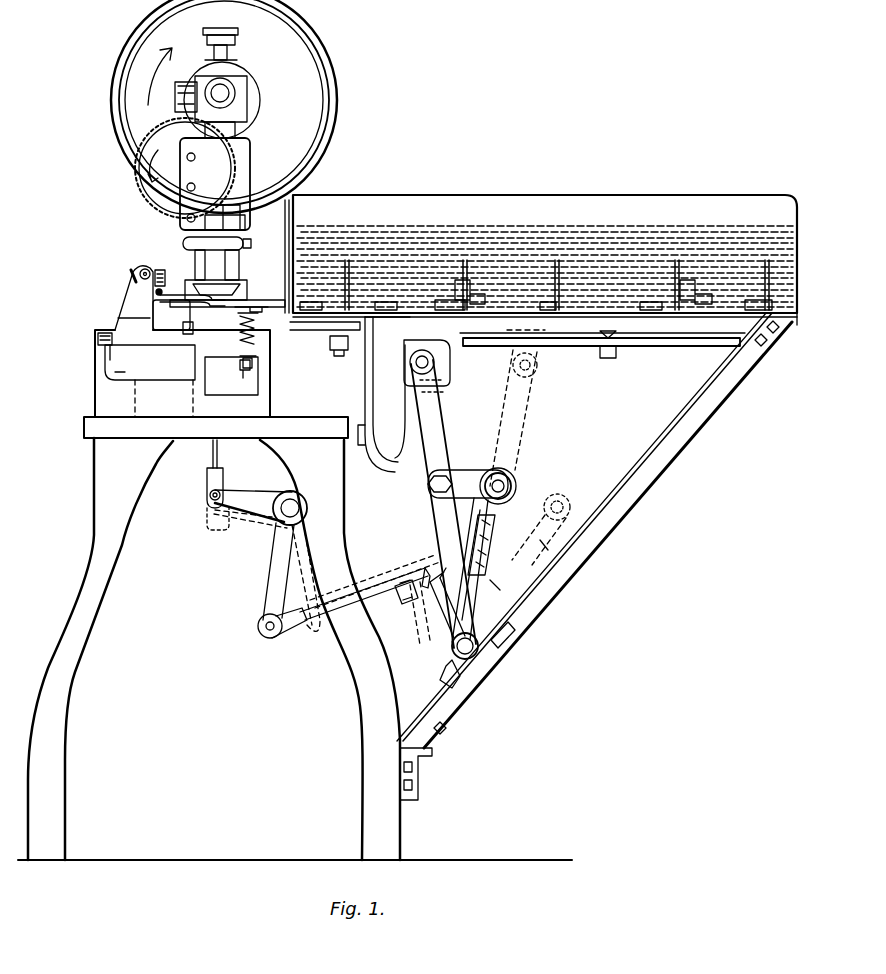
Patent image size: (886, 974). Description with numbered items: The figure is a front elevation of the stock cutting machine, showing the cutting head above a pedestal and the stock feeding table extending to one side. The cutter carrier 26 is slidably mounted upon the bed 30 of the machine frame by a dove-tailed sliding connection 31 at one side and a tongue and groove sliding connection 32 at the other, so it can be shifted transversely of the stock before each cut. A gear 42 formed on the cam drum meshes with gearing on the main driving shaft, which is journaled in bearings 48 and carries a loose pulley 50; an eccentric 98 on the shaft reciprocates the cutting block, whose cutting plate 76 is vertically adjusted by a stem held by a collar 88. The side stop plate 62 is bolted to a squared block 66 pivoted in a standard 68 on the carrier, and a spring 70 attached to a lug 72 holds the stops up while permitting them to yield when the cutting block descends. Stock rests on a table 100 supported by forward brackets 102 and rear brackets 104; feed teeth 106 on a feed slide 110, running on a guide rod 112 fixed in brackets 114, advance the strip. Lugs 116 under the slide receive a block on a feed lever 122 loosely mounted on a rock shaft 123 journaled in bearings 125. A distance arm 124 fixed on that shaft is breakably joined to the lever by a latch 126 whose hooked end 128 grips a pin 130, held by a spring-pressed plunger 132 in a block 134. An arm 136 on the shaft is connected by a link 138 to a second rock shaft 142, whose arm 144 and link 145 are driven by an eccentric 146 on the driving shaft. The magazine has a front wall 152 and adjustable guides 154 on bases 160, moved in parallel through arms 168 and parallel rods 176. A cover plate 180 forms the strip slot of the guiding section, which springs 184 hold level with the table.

The cutter carrier 26 is at (118, 328).
The bed 30 is at (250, 385).
The dove-tailed sliding connection 31 is at (232, 365).
The tongue and groove sliding connection 32 is at (98, 343).
The gear 42 is at (136, 185).
The bearings 48 is at (242, 72).
The loose pulley 50 is at (220, 31).
The side stop plate 62 is at (200, 296).
The squared block 66 is at (148, 268).
The standard 68 is at (155, 293).
The spring 70 is at (130, 274).
The lug 72 is at (142, 271).
The cutting plate 76 is at (248, 278).
The collar 88 is at (240, 244).
The eccentric 98 is at (232, 96).
The table 100 is at (690, 348).
The brackets 102 is at (372, 408).
The brackets 104 is at (688, 432).
The feed teeth 106 is at (252, 360).
The feed slide 110 is at (334, 342).
The guide rod 112 is at (576, 350).
The brackets 114 is at (340, 350).
The lugs 116 is at (436, 364).
The feed lever 122 is at (432, 428).
The rock shaft 123 is at (452, 650).
The distance arm 124 is at (488, 604).
The bearings 125 is at (470, 670).
The latch 126 is at (474, 474).
The hooked end 128 is at (508, 482).
The pin 130 is at (510, 470).
The spring-pressed plunger 132 is at (510, 500).
The block 134 is at (455, 508).
The arm 136 is at (434, 592).
The link 138 is at (392, 590).
The rock shaft 142 is at (280, 518).
The arm 144 is at (282, 492).
The link 145 is at (213, 444).
The eccentric 146 is at (262, 575).
The front wall 152 is at (296, 208).
The adjustable guides 154 is at (510, 188).
The bases 160 is at (568, 305).
The arms 168 is at (455, 300).
The parallel rods 176 is at (604, 358).
The cover plate 180 is at (258, 302).
The springs 184 is at (258, 338).